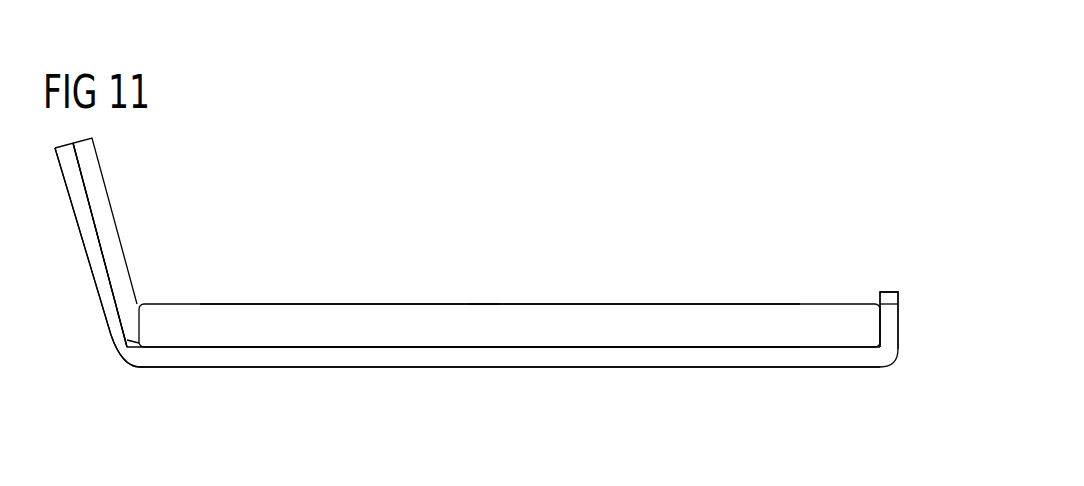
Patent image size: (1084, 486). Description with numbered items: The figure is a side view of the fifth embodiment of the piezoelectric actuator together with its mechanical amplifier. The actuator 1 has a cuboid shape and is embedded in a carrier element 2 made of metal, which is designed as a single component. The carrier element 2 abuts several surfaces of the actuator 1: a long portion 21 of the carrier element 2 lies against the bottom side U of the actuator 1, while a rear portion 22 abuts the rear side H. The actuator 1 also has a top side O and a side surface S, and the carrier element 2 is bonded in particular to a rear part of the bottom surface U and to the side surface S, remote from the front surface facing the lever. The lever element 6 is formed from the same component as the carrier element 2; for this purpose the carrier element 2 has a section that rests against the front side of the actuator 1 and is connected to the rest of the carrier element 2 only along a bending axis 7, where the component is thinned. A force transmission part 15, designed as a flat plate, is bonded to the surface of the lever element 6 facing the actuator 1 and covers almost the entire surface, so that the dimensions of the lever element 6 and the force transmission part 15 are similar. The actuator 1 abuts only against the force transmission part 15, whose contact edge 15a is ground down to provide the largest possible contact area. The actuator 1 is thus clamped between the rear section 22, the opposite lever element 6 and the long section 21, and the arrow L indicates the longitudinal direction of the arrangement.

The piezoelectric actuator 1 is at (490, 313).
The carrier element 2 is at (588, 357).
The long portion of the carrier element 21 is at (587, 392).
The rear portion of the carrier element 22 is at (890, 300).
The lever element 6 is at (95, 265).
The bending axis 7 is at (125, 362).
The force transmission part 15 is at (104, 206).
The contact edge 15a is at (137, 331).
The top side O is at (412, 303).
The bottom side U is at (362, 348).
The side surface S is at (485, 337).
The rear side H is at (884, 327).
The longitudinal direction L is at (857, 404).